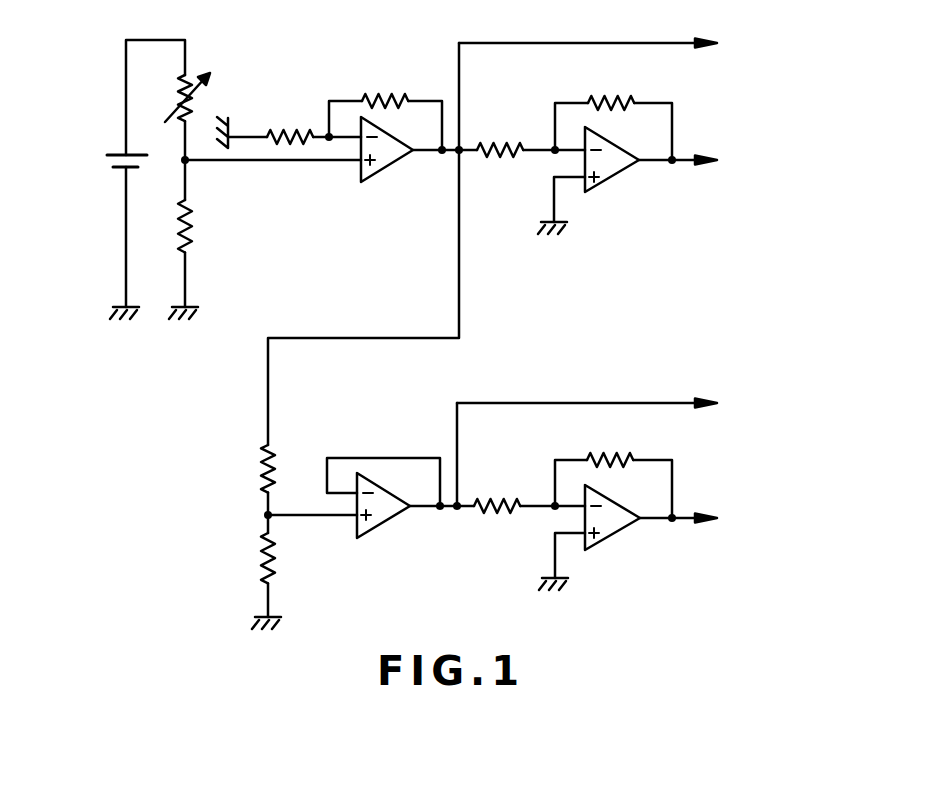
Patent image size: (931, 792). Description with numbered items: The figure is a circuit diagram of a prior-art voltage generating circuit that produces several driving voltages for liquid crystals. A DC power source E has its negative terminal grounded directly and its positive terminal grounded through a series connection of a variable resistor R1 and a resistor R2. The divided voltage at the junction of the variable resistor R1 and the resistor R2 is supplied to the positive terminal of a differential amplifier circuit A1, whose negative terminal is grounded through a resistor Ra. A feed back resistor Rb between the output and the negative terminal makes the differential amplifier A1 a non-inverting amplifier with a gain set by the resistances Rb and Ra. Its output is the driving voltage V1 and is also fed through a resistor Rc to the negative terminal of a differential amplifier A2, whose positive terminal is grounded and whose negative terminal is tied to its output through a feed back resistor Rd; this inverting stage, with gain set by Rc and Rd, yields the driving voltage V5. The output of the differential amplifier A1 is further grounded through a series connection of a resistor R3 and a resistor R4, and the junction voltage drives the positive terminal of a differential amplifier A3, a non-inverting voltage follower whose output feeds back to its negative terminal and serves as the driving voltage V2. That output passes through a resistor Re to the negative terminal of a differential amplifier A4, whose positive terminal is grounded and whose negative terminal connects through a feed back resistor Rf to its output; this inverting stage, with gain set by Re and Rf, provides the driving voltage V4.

The DC power source E is at (108, 158).
The variable resistor R1 is at (195, 100).
The resistor R2 is at (196, 227).
The resistor Ra is at (288, 130).
The feed back resistor Rb is at (382, 95).
The resistor Rc is at (499, 140).
The feed back resistor Rd is at (607, 97).
The resistor Re is at (491, 498).
The feed back resistor Rf is at (607, 455).
The resistor R3 is at (260, 467).
The resistor R4 is at (260, 563).
The differential amplifier circuit A1 is at (387, 163).
The differential amplifier A2 is at (618, 173).
The differential amplifier A3 is at (387, 520).
The differential amplifier A4 is at (615, 532).
The driving voltage V1 is at (610, 44).
The driving voltage V2 is at (609, 404).
The driving voltage V4 is at (700, 519).
The driving voltage V5 is at (700, 161).